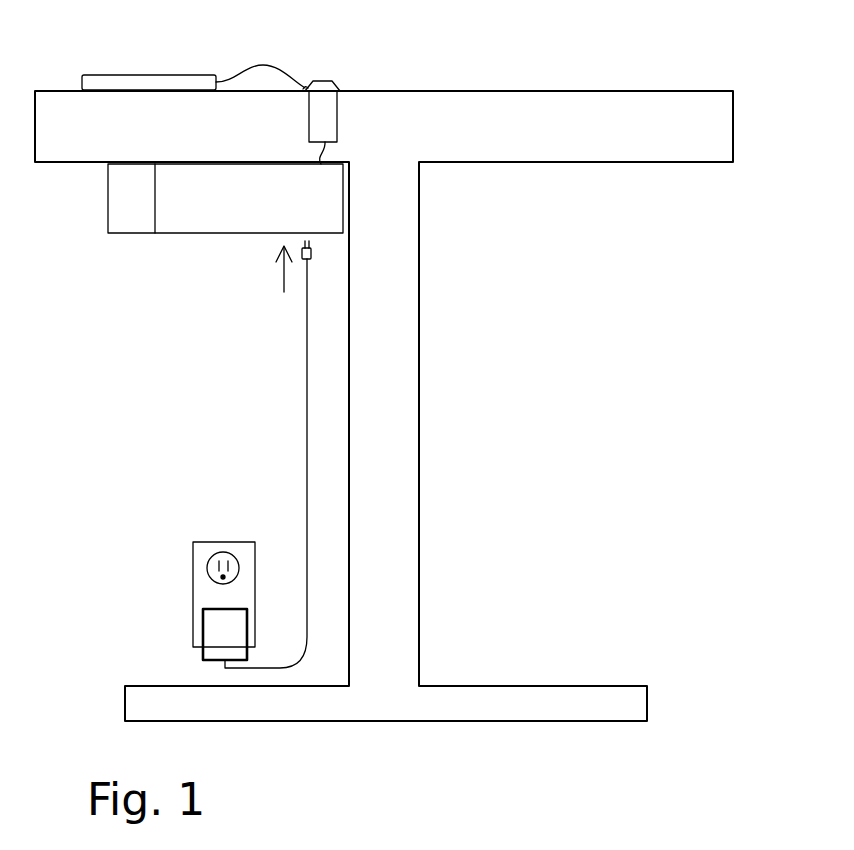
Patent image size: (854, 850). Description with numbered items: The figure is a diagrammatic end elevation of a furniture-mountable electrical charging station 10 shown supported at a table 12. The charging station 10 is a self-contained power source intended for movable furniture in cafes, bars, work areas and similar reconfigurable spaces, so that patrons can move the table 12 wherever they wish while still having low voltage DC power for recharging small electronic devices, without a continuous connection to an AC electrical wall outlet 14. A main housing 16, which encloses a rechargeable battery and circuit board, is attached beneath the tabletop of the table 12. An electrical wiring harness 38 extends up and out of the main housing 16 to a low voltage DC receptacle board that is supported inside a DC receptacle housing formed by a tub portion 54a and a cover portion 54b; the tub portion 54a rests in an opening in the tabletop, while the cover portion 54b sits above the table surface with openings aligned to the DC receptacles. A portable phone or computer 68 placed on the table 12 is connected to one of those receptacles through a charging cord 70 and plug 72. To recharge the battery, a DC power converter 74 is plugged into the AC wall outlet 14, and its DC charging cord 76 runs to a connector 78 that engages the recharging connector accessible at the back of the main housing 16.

The furniture-mountable electrical charging station 10 is at (348, 191).
The table 12 is at (625, 90).
The AC electrical wall outlet 14 is at (193, 565).
The main housing 16 is at (108, 203).
The electrical wiring harness 38 is at (321, 148).
The tub portion 54a is at (308, 112).
The cover portion 54b is at (338, 82).
The portable phone or computer 68 is at (143, 72).
The charging cord 70 is at (260, 67).
The plug 72 is at (307, 80).
The DC power converter 74 is at (203, 630).
The DC charging cord 76 is at (307, 482).
The connector 78 is at (312, 252).